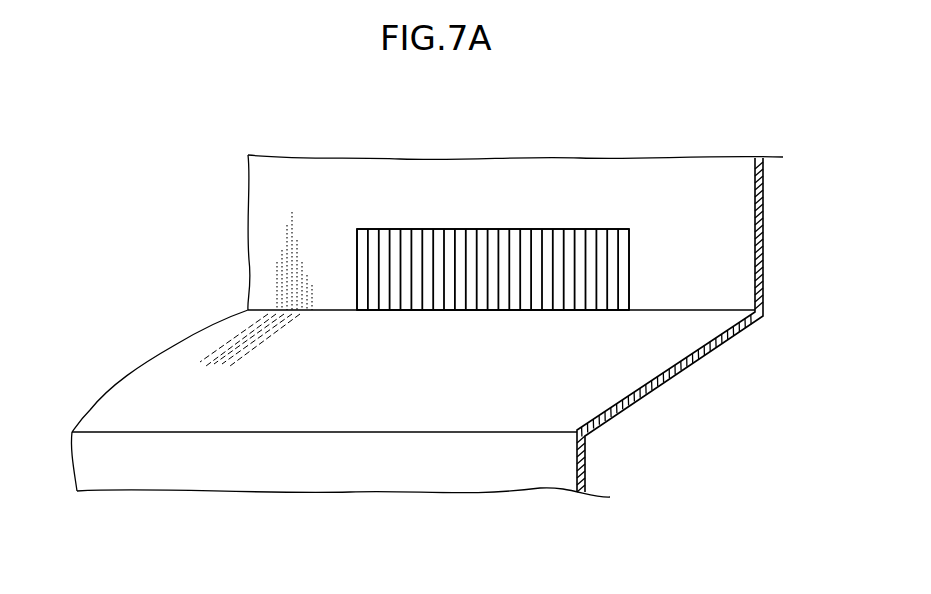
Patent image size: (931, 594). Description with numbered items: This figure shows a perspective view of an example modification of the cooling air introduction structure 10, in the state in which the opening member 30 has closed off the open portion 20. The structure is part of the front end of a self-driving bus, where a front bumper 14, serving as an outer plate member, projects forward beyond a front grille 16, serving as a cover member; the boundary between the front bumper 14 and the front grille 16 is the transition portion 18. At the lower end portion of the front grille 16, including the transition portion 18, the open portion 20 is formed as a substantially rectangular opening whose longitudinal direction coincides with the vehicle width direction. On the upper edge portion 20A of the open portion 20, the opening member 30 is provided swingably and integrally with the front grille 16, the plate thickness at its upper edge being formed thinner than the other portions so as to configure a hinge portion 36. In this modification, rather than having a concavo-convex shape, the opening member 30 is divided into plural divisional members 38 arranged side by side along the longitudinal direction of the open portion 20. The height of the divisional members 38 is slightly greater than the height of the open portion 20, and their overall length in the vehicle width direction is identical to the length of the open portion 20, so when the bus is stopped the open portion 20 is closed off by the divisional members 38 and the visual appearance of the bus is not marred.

The cooling air introduction structure 10 is at (228, 213).
The front bumper 14 is at (458, 483).
The front grille 16 is at (521, 172).
The transition portion 18 is at (702, 302).
The open portion 20 is at (358, 277).
The upper edge portion of the open portion 20A is at (600, 232).
The opening member 30 is at (536, 297).
The hinge portion 36 is at (453, 229).
The divisional member 38 is at (460, 311).